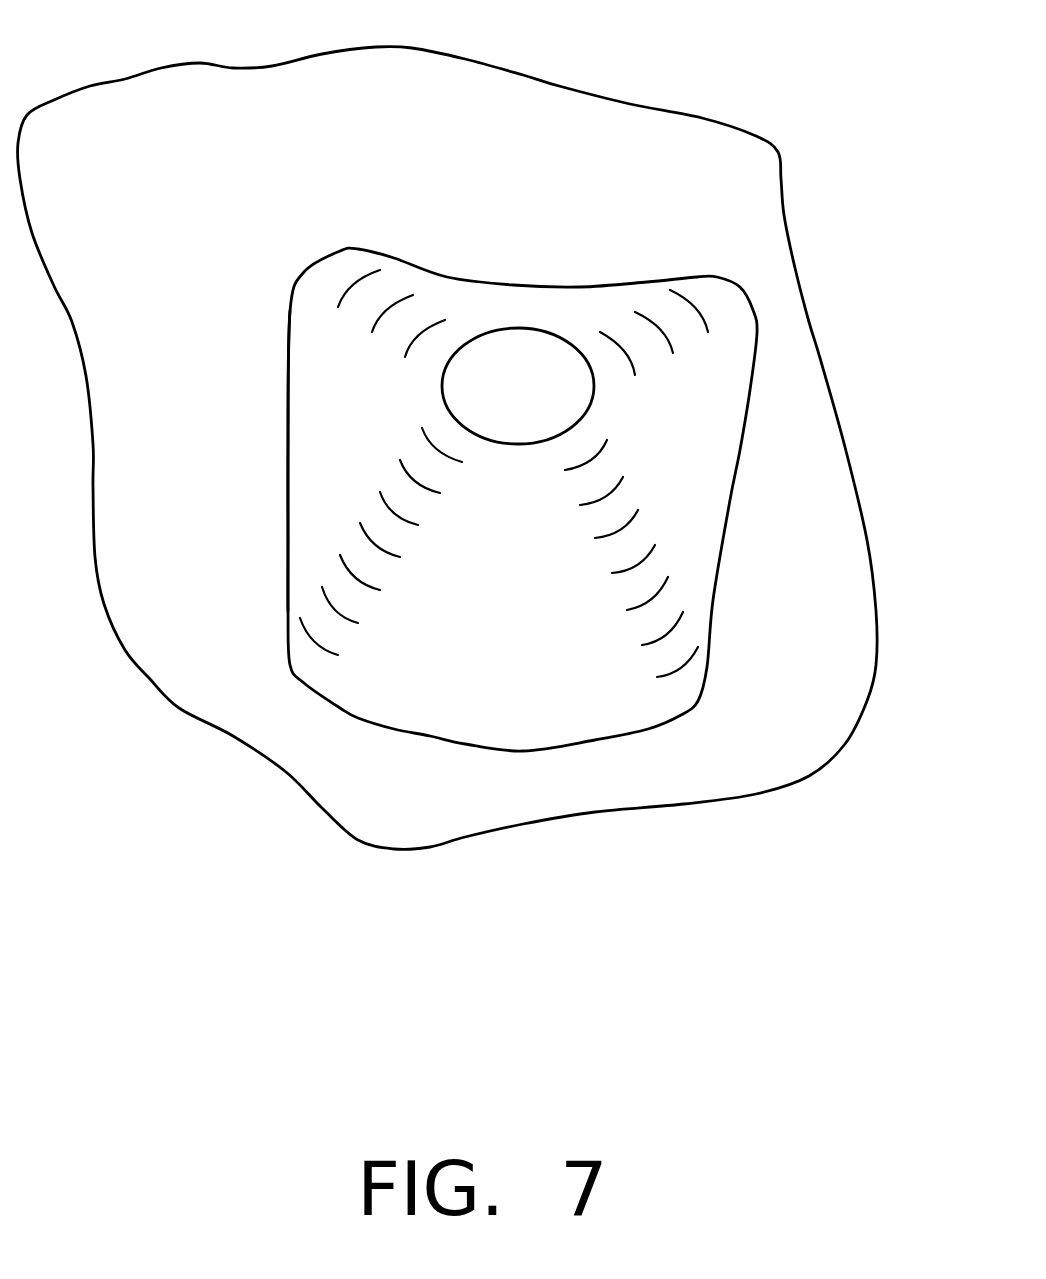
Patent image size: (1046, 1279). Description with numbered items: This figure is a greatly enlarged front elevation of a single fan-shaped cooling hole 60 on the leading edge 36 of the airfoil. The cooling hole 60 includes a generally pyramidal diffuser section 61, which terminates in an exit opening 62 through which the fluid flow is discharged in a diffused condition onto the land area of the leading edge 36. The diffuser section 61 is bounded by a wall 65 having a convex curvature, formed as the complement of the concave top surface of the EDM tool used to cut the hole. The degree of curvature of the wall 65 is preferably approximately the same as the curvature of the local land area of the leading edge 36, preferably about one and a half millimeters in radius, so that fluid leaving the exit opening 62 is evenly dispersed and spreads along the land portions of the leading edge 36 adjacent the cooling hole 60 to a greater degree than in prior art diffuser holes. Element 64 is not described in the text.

The leading edge 36 is at (770, 733).
The cooling hole 60 is at (758, 390).
The diffuser section 61 is at (430, 688).
The exit opening 62 is at (288, 586).
The aperture 64 is at (541, 358).
The wall 65 is at (462, 302).